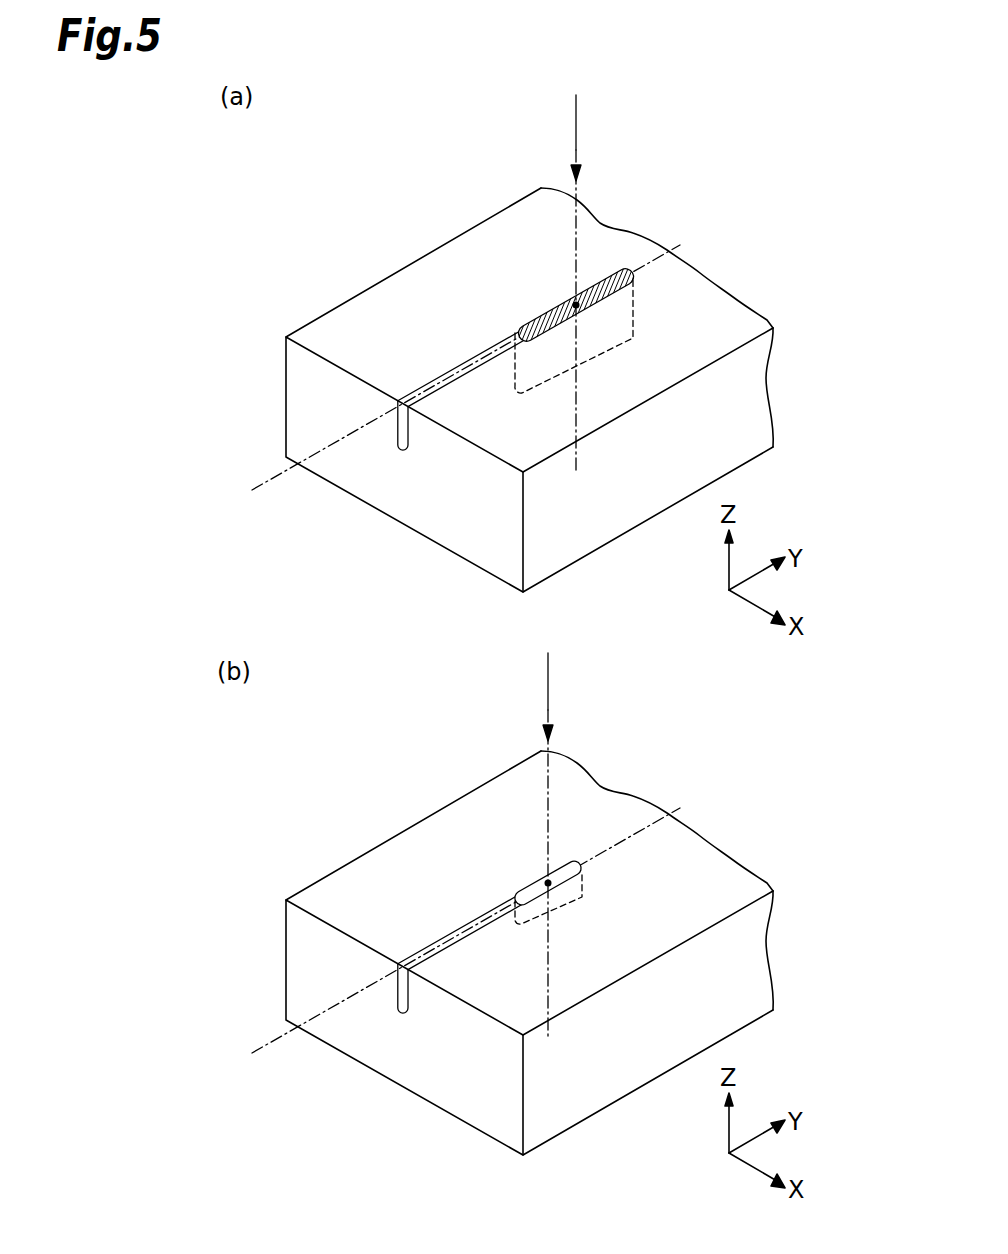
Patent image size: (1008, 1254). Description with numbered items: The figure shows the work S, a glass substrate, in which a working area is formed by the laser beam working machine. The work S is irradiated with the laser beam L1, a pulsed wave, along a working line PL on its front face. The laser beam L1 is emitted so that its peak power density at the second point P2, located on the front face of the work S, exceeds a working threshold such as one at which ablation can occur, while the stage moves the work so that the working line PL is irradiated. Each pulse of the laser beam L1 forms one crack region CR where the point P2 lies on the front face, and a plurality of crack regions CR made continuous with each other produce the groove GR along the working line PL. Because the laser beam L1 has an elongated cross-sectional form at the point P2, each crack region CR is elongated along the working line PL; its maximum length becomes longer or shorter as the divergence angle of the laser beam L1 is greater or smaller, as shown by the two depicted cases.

The laser beam L1 is at (578, 122).
The second point P2 is at (574, 302).
The groove GR is at (463, 362).
The crack region CR is at (636, 317).
The working line PL is at (268, 476).
The work S is at (435, 518).